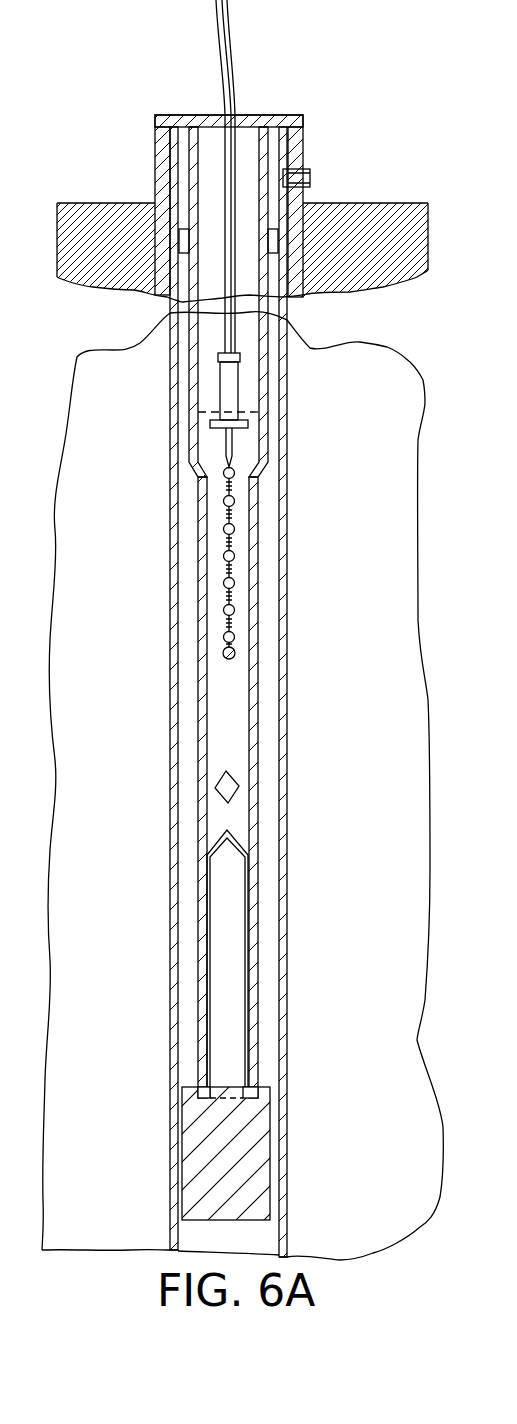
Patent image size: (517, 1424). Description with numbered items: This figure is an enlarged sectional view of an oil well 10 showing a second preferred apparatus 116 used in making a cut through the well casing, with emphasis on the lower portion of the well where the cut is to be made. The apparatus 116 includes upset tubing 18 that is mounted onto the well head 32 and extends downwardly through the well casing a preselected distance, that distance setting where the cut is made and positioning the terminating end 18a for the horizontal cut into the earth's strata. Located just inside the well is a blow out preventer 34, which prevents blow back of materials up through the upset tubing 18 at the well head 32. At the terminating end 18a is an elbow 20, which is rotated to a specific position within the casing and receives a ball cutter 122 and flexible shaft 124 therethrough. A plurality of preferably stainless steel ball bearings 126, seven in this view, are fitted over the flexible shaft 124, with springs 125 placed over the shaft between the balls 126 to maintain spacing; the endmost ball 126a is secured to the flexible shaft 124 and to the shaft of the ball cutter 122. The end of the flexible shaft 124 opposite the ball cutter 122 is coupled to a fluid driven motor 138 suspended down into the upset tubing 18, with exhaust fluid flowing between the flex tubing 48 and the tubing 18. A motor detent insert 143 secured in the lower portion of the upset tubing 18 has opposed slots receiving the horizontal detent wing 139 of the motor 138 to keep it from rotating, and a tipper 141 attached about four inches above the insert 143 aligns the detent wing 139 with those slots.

The oil well 10 is at (343, 160).
The upset tubing 18 is at (262, 478).
The terminating end 18a is at (257, 1087).
The elbow 20 is at (257, 1167).
The well head 32 is at (244, 115).
The blow out preventer 34 is at (278, 240).
The flex tubing 48 is at (233, 40).
The second preferred apparatus 116 is at (118, 398).
The ball cutter 122 is at (236, 656).
The flexible shaft 124 is at (233, 568).
The springs 125 is at (233, 543).
The ball bearings 126 is at (233, 608).
The endmost ball 126a is at (234, 632).
The fluid driven motor 138 is at (233, 383).
The horizontal detent wing 139 is at (240, 424).
The tipper 141 is at (238, 788).
The motor detent insert 143 is at (232, 838).